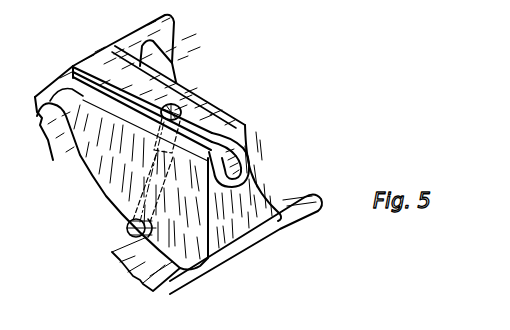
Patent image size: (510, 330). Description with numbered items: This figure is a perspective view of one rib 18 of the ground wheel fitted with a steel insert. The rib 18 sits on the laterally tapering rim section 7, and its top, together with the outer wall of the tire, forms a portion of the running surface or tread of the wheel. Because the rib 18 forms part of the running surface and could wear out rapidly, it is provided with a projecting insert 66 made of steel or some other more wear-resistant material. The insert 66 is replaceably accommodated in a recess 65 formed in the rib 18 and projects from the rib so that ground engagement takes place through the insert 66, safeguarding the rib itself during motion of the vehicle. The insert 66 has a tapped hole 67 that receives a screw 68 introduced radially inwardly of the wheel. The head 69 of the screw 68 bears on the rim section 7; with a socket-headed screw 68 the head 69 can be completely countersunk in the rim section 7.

The rim section 7 is at (150, 272).
The rib 18 is at (223, 233).
The recess 65 is at (243, 181).
The insert 66 is at (155, 92).
The tapped hole 67 is at (183, 118).
The screw 68 is at (147, 187).
The head 69 is at (125, 229).